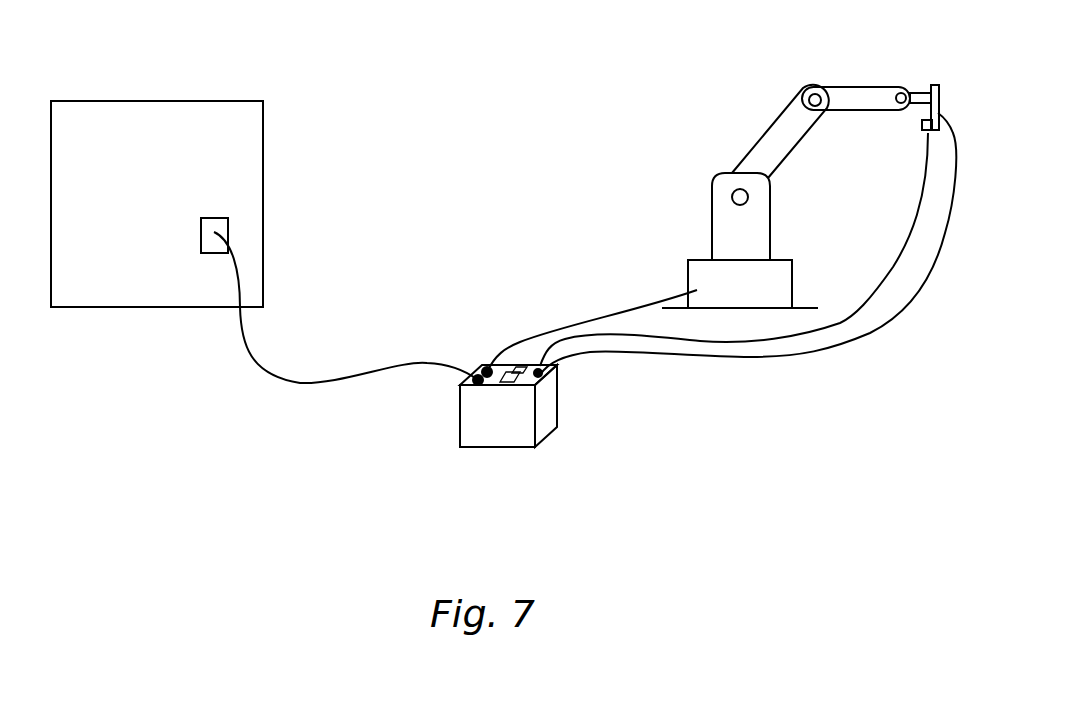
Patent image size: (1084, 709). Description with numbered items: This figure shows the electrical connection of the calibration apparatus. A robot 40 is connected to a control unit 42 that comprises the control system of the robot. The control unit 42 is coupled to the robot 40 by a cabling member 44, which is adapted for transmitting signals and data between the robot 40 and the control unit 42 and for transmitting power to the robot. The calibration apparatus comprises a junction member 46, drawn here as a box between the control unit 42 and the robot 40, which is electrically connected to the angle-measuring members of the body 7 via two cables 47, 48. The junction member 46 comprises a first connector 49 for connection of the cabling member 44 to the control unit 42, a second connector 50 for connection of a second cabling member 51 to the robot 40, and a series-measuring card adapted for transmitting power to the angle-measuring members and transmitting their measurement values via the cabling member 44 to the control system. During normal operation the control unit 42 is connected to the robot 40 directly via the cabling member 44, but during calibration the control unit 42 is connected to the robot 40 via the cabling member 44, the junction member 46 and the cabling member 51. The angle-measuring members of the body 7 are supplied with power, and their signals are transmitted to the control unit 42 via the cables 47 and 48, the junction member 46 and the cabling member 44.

The body 7 is at (922, 125).
The robot 40 is at (705, 152).
The control unit 42 is at (155, 120).
The cabling member 44 is at (322, 383).
The junction member 46 is at (495, 425).
The cable 47 is at (813, 357).
The cable 48 is at (858, 313).
The first connector 49 is at (462, 377).
The second connector 50 is at (486, 371).
The second cabling member 51 is at (560, 328).